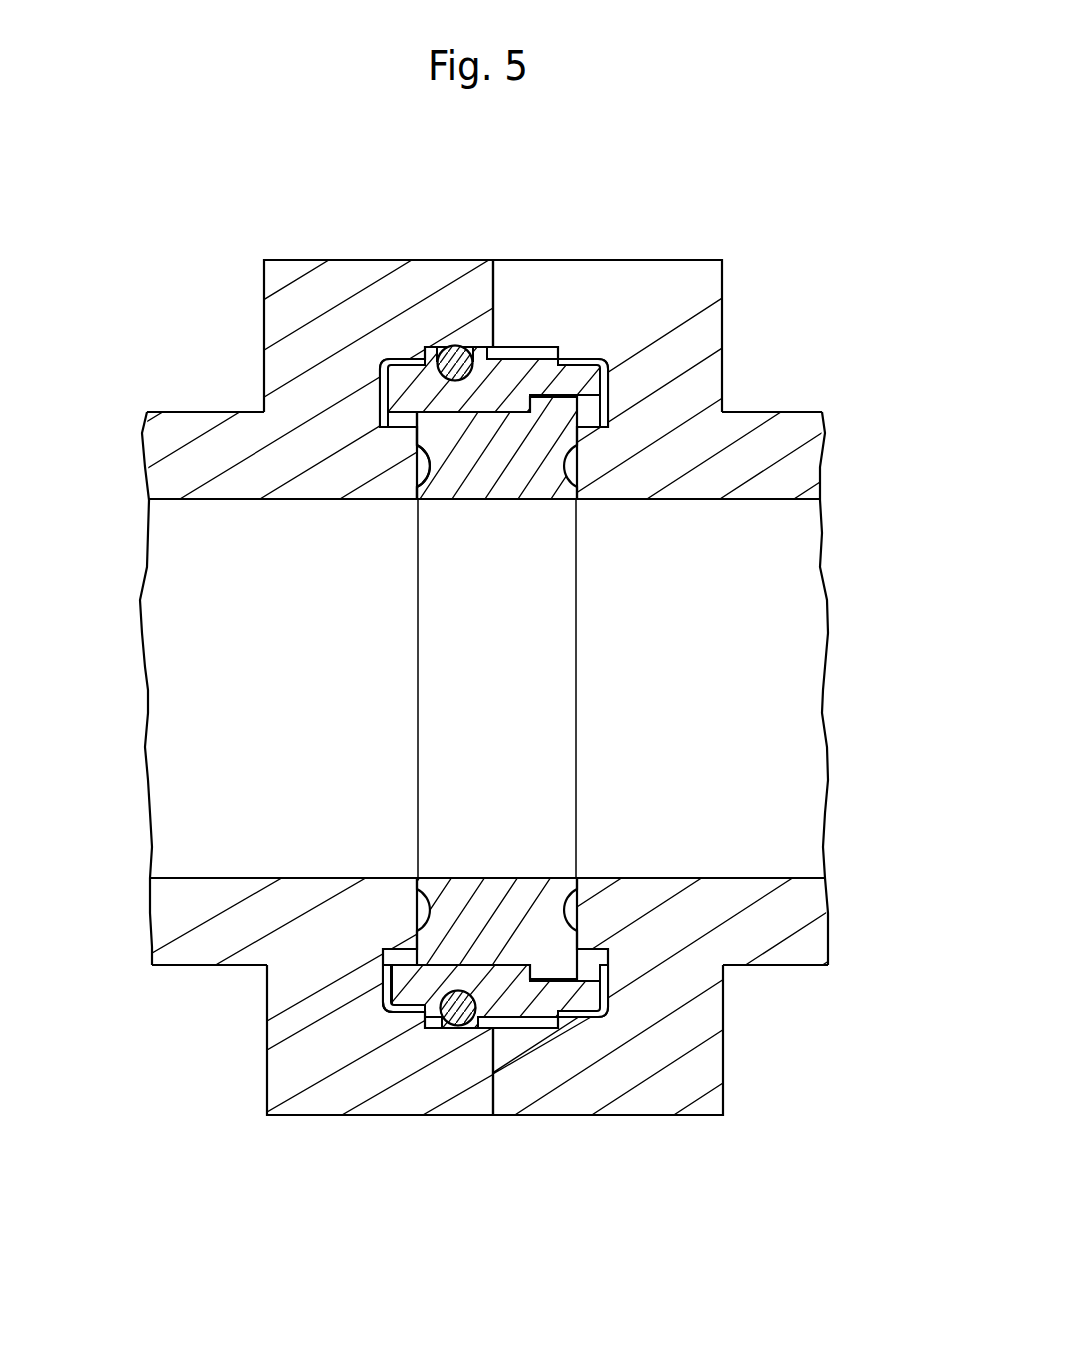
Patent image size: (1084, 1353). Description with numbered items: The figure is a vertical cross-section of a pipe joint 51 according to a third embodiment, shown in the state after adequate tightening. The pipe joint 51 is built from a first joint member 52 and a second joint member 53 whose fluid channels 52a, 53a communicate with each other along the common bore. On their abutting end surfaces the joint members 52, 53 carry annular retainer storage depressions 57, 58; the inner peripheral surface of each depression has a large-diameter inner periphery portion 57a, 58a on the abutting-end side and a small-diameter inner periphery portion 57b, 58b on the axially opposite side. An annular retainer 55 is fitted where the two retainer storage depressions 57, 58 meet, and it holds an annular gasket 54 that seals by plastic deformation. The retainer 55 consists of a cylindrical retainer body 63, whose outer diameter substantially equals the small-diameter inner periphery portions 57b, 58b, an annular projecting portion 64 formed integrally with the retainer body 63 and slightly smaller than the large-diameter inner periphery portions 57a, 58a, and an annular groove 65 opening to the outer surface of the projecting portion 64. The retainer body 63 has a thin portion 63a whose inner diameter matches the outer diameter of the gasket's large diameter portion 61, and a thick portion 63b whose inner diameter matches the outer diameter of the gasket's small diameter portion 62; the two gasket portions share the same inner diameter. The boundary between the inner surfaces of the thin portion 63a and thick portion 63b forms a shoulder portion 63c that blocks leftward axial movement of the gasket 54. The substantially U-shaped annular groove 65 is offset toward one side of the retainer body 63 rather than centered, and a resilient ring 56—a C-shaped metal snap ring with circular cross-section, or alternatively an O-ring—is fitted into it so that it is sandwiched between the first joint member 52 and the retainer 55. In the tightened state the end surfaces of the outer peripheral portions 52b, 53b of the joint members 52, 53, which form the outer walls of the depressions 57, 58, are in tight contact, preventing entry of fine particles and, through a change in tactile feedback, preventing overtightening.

The pipe joint 51 is at (757, 330).
The first joint member 52 is at (476, 741).
The fluid channel 52a is at (178, 880).
The outer peripheral portion 52b is at (433, 268).
The second joint member 53 is at (542, 655).
The fluid channel 53a is at (778, 877).
The outer peripheral portion 53b is at (510, 265).
The annular gasket 54 is at (527, 888).
The annular retainer 55 is at (486, 1058).
The resilient ring 56 is at (447, 1020).
The retainer storage depression 57 is at (378, 978).
The large-diameter inner periphery portion 57a is at (482, 1015).
The small-diameter inner periphery portion 57b is at (392, 1012).
The retainer storage depression 58 is at (613, 965).
The large-diameter inner periphery portion 58a is at (538, 1000).
The small-diameter inner periphery portion 58b is at (606, 1003).
The large diameter portion 61 is at (553, 408).
The small diameter portion 62 is at (455, 440).
The retainer body 63 is at (505, 363).
The thin portion 63a is at (587, 377).
The thick portion 63b is at (470, 393).
The shoulder portion 63c is at (533, 343).
The annular projecting portion 64 is at (432, 347).
The annular groove 65 is at (460, 350).